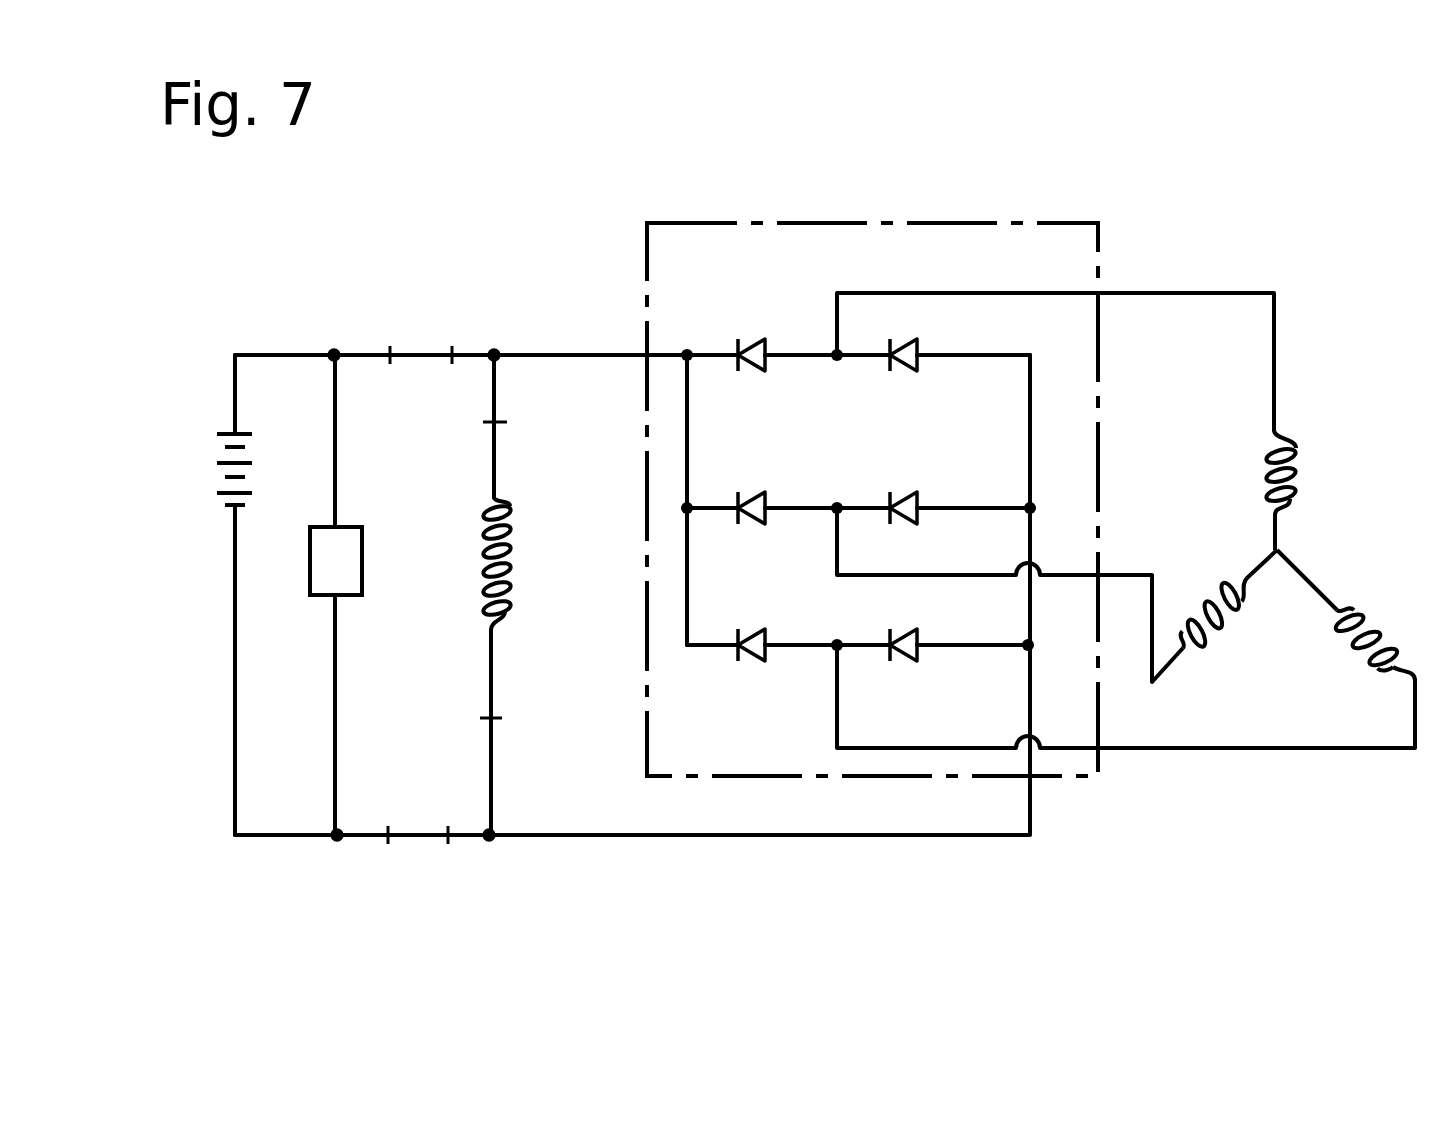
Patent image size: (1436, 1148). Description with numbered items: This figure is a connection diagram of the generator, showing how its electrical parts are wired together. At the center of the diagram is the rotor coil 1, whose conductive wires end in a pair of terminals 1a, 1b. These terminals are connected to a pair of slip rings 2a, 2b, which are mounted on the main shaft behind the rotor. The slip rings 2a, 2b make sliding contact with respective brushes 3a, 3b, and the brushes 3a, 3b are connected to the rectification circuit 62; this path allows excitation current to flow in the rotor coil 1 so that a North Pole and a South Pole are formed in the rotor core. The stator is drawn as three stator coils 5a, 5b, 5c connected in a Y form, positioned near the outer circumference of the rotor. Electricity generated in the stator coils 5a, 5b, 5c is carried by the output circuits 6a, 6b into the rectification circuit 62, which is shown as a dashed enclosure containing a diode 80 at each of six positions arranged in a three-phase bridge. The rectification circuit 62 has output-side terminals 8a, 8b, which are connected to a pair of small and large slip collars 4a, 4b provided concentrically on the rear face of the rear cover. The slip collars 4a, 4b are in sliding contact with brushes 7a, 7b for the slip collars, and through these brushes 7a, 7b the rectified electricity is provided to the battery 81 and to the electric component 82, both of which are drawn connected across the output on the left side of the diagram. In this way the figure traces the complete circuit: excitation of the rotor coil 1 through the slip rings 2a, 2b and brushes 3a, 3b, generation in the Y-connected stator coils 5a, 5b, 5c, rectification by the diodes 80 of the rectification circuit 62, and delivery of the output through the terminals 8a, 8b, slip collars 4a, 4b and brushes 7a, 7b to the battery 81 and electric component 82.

The rotor coil 1 is at (519, 568).
The terminal of rotor coil conductive wire 1a is at (516, 463).
The terminal of rotor coil conductive wire 1b is at (512, 670).
The slip ring 2a is at (483, 422).
The slip ring 2b is at (482, 718).
The brush 3a is at (518, 387).
The brush 3b is at (512, 777).
The slip collar 4a is at (421, 376).
The slip collar 4b is at (418, 812).
The stator coil 5a is at (1295, 476).
The stator coil 5b is at (1346, 615).
The stator coil 5c is at (1214, 616).
The output circuit 6a is at (1186, 265).
The output circuit 6b is at (1256, 776).
The brush for slip collar 7a is at (353, 329).
The brush for slip collar 7b is at (356, 854).
The output-side terminal of rectification circuit 8a is at (475, 329).
The output-side terminal of rectification circuit 8b is at (473, 854).
The rectification circuit 62 is at (872, 471).
The diode 80 is at (745, 330).
The battery 81 is at (195, 472).
The electric component 82 is at (362, 566).